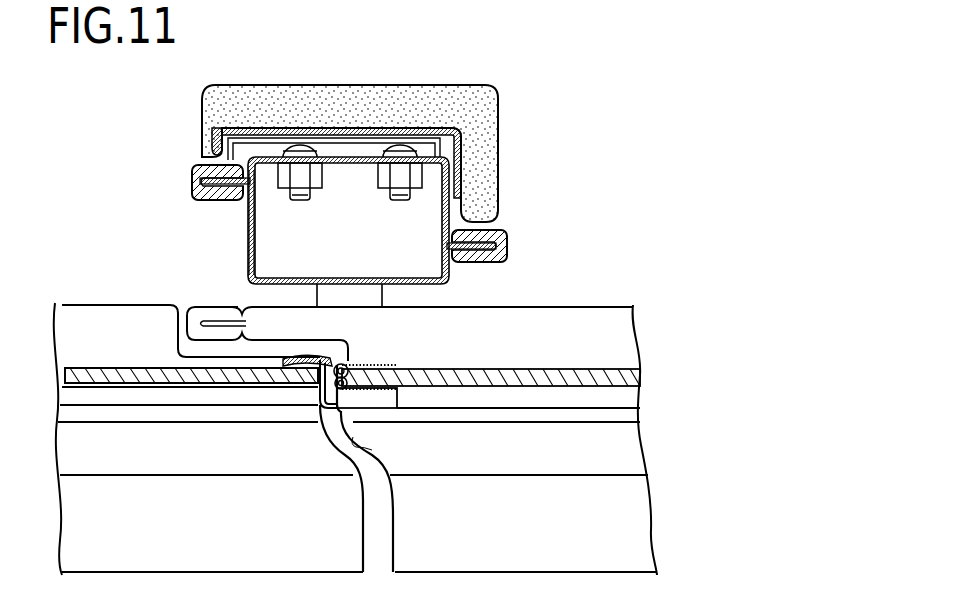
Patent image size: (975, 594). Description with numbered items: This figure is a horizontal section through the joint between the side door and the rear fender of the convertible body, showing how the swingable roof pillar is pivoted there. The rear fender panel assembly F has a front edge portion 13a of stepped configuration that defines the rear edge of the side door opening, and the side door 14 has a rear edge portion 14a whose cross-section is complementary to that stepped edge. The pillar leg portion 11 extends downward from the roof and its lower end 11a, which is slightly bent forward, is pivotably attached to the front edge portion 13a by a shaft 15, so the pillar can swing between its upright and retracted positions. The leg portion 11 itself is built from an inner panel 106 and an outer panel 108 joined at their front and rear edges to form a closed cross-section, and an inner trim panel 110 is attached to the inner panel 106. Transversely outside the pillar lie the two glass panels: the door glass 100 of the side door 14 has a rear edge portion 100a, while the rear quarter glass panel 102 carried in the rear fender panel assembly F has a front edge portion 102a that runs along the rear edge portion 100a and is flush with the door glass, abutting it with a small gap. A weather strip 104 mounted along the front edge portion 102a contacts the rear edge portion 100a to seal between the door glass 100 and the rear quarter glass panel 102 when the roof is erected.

The inner trim panel 110 is at (499, 114).
The inner panel 106 is at (449, 176).
The outer panel 108 is at (437, 288).
The leg portion 11 is at (241, 218).
The lower end 11a is at (247, 260).
The shaft 15 is at (383, 291).
The side door 14 is at (133, 301).
The rear edge portion 14a is at (357, 450).
The front edge portion 13a is at (372, 450).
The door glass 100 is at (214, 380).
The rear edge portion 100a is at (274, 385).
The weather strip 104 is at (331, 360).
The rear quarter glass panel 102 is at (514, 367).
The front edge portion 102a is at (420, 366).
The rear fender panel assembly F is at (519, 288).